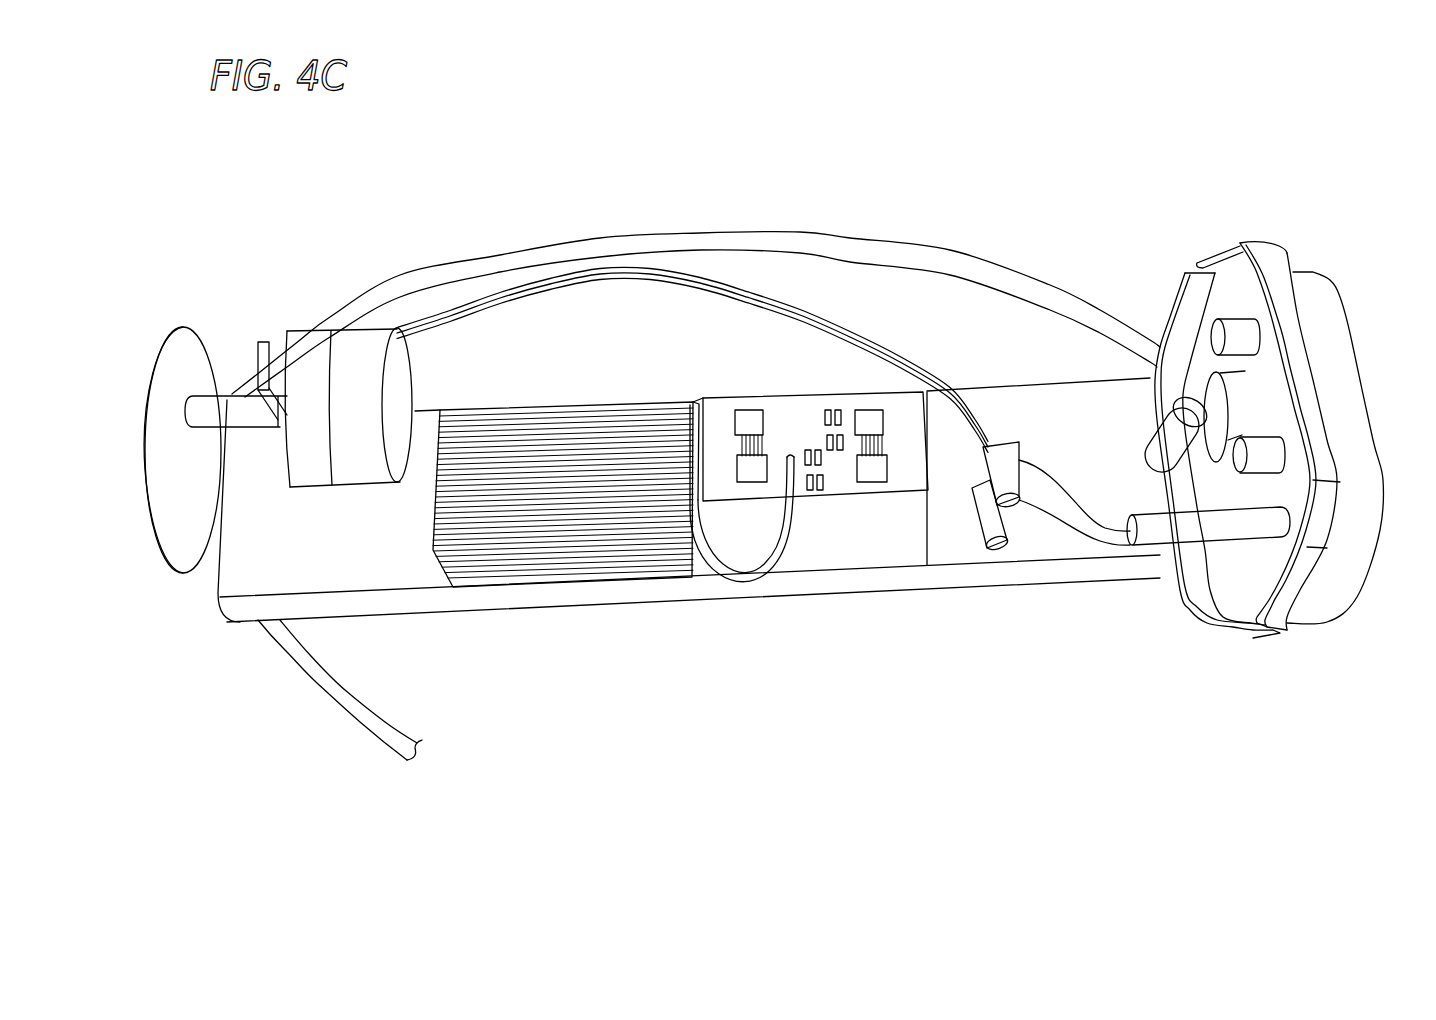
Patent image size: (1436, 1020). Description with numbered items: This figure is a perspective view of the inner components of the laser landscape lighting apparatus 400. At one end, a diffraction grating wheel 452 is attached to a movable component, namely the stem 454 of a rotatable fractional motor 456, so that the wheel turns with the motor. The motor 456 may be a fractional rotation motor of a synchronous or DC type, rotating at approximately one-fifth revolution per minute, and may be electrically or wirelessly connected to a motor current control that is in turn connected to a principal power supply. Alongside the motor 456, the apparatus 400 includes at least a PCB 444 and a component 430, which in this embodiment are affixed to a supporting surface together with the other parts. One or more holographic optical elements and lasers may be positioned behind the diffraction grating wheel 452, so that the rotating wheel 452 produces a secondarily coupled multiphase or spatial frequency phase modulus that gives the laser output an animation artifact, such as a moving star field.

The laser landscape lighting apparatus 400 is at (1107, 124).
The element 430 is at (594, 433).
The PCB 444 is at (798, 418).
The diffraction grating wheel 452 is at (185, 345).
The stem 454 is at (228, 400).
The rotatable fractional motor 456 is at (367, 342).